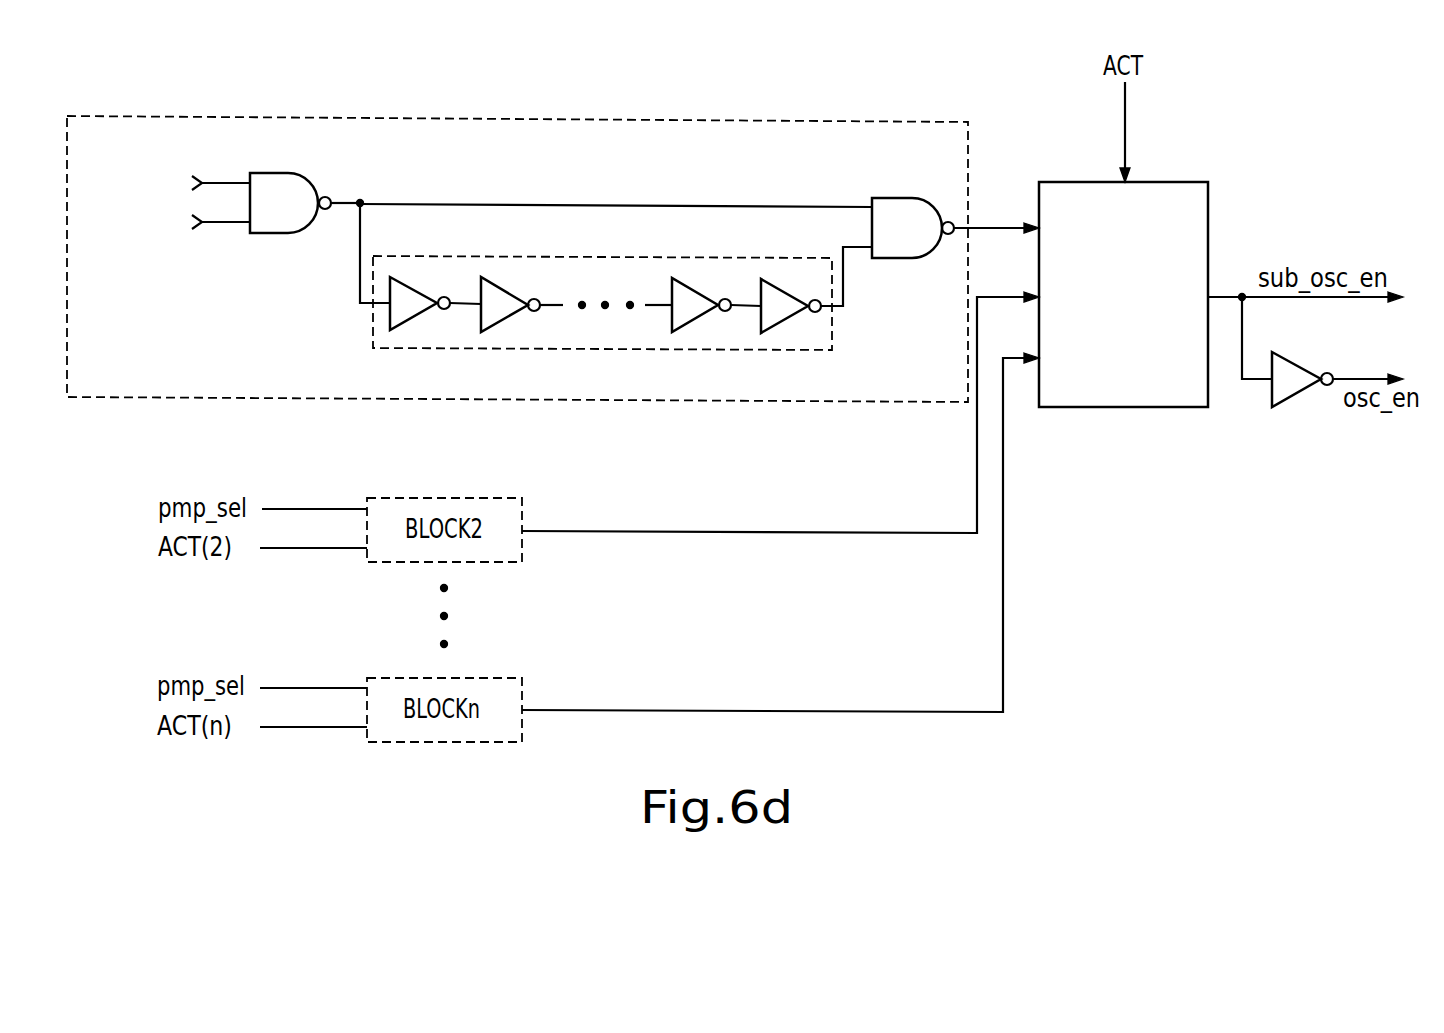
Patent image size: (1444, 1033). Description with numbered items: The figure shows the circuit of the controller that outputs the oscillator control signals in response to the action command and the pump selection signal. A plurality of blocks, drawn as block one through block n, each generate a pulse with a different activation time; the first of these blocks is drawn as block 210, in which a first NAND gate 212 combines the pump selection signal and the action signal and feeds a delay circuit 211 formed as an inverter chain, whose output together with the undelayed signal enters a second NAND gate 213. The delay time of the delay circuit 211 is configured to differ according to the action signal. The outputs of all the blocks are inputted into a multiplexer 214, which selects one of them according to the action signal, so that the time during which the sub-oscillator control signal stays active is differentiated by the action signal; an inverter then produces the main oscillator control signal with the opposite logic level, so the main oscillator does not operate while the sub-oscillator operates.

The first pump block (BLOCK1) 210 is at (536, 226).
The delay circuit 211 is at (832, 322).
The first NAND gate 212 is at (308, 176).
The second NAND gate 213 is at (912, 198).
The multiplexer 214 is at (1208, 182).